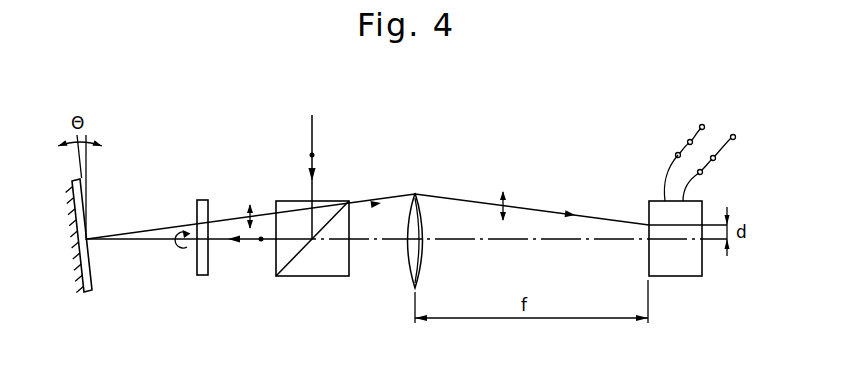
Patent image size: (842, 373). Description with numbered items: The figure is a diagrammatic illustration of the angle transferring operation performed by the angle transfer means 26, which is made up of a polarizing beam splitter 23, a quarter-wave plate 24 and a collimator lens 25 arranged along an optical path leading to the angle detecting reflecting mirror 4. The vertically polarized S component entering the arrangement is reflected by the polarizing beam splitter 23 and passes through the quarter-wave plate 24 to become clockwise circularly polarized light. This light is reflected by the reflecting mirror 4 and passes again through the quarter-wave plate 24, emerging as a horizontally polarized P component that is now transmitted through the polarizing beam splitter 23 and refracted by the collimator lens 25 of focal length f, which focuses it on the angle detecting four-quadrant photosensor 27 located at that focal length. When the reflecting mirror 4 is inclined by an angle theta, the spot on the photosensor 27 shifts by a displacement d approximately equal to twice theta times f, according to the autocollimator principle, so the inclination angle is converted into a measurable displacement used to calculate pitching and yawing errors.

The reflecting mirror 4 is at (86, 293).
The polarizing beam splitter 23 is at (324, 268).
The quarter-wave plate 24 is at (202, 275).
The collimator lens 25 is at (416, 193).
The angle transfer means 26 is at (265, 184).
The 4-quadrant photosensor 27 is at (692, 276).